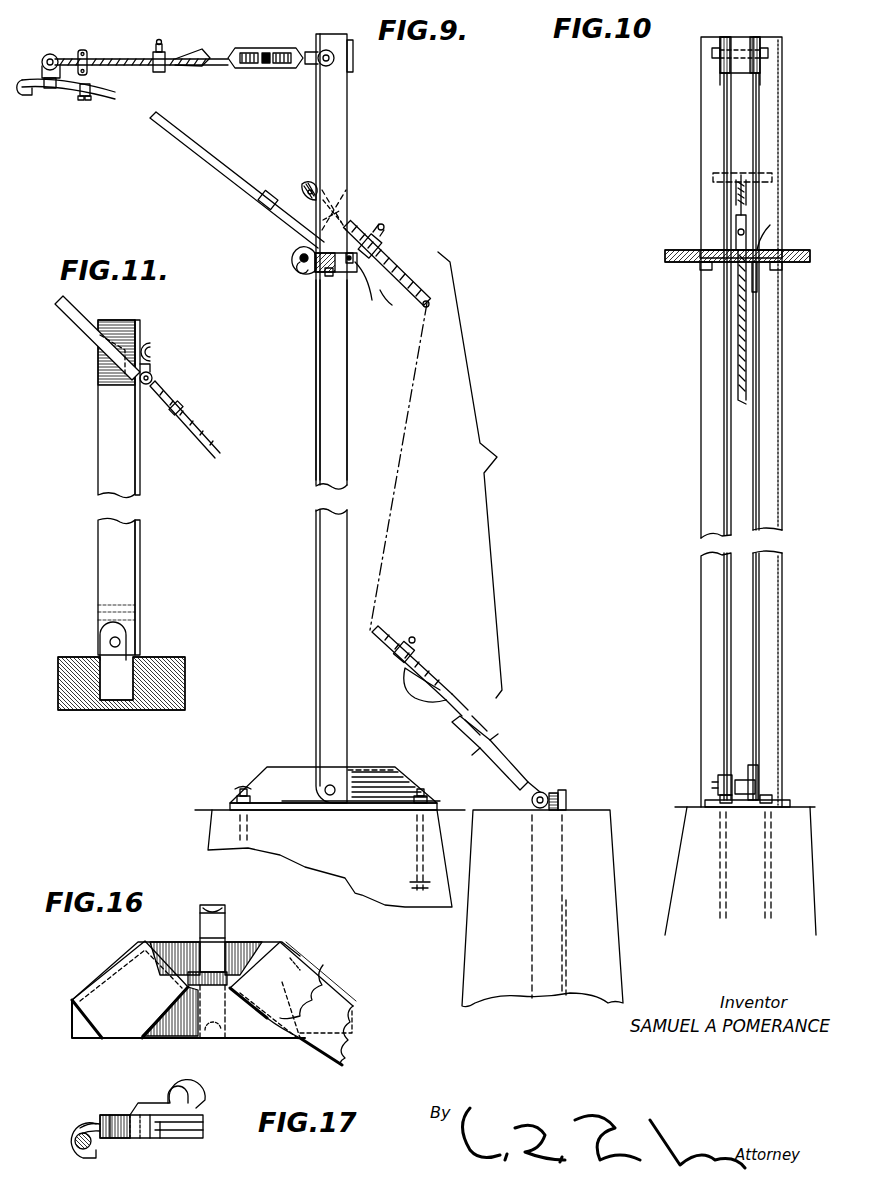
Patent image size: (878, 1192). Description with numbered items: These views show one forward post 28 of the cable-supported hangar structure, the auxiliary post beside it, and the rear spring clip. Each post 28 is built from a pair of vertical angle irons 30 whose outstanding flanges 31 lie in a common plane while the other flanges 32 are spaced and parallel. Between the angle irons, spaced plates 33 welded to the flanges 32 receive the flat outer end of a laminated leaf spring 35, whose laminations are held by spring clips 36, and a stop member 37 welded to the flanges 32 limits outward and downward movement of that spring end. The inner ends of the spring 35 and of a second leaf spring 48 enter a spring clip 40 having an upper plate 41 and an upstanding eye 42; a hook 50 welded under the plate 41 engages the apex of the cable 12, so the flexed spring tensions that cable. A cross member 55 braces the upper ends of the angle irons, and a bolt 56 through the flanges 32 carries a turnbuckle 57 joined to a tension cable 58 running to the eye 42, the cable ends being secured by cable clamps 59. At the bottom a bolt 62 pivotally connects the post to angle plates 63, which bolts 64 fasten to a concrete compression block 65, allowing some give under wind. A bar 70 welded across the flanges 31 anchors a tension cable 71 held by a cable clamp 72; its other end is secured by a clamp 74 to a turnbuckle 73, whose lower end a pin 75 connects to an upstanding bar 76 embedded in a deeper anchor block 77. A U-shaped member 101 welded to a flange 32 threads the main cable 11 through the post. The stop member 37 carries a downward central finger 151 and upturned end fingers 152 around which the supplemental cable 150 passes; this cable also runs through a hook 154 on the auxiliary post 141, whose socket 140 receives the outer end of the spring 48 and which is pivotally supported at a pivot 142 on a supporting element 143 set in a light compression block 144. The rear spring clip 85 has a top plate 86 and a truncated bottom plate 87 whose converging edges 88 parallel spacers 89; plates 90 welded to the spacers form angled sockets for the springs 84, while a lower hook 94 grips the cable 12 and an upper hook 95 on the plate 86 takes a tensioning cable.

In FIG. 9, the cable 11 is at (298, 264).
In FIG. 9, the cable 12 is at (38, 95).
In FIG. 16, the cable 12 is at (226, 910).
In FIG. 17, the cable 12 is at (84, 1126).
In FIG. 9, the forward post 28 is at (349, 165).
In FIG. 10, the forward post 28 is at (696, 322).
In FIG. 9, the vertical angle iron 30 is at (348, 378).
In FIG. 10, the vertical angle iron 30 is at (762, 252).
In FIG. 9, the outstanding flange 31 is at (318, 328).
In FIG. 10, the outstanding flange 31 is at (702, 150).
In FIG. 9, the flange 32 is at (338, 345).
In FIG. 10, the flange 32 is at (722, 108).
In FIG. 9, the spaced plate 33 is at (341, 212).
In FIG. 10, the spaced plate 33 is at (735, 220).
In FIG. 9, the laminated leaf spring 35 is at (240, 178).
In FIG. 9, the spring clip 36 is at (88, 100).
In FIG. 9, the stop member 37 is at (340, 272).
In FIG. 10, the stop member 37 is at (705, 253).
In FIG. 9, the spring clip 40 is at (52, 90).
In FIG. 9, the upper plate 41 is at (42, 70).
In FIG. 9, the upstanding eye 42 is at (52, 54).
In FIG. 11, the leaf spring 48 is at (62, 320).
In FIG. 9, the hook 50 is at (25, 96).
In FIG. 9, the cross member 55 is at (353, 68).
In FIG. 10, the cross member 55 is at (720, 80).
In FIG. 9, the bolt 56 is at (315, 66).
In FIG. 10, the bolt 56 is at (715, 53).
In FIG. 9, the turnbuckle 57 is at (268, 70).
In FIG. 9, the tension cable 58 is at (158, 72).
In FIG. 9, the cable clamp 59 is at (86, 55).
In FIG. 9, the bolt 62 is at (334, 786).
In FIG. 10, the bolt 62 is at (715, 780).
In FIG. 9, the angle plate 63 is at (385, 775).
In FIG. 10, the angle plate 63 is at (758, 768).
In FIG. 9, the bolt 64 is at (240, 796).
In FIG. 9, the compression block 65 is at (438, 820).
In FIG. 10, the compression block 65 is at (790, 805).
In FIG. 9, the bar 70 is at (308, 180).
In FIG. 9, the tension cable 71 is at (398, 280).
In FIG. 10, the tension cable 71 is at (738, 362).
In FIG. 9, the cable clamp 72 is at (383, 230).
In FIG. 9, the turnbuckle 73 is at (492, 758).
In FIG. 9, the cable clamp 74 is at (414, 646).
In FIG. 9, the pin 75 is at (544, 792).
In FIG. 9, the upstanding bar 76 is at (566, 793).
In FIG. 9, the anchor block 77 is at (598, 815).
In FIG. 16, the spring leaf 84 is at (362, 1017).
In FIG. 16, the spring clip 85 is at (321, 970).
In FIG. 17, the spring clip 85 is at (203, 1115).
In FIG. 16, the top plate 86 is at (245, 958).
In FIG. 17, the top plate 86 is at (110, 1115).
In FIG. 16, the bottom plate 87 is at (252, 1038).
In FIG. 17, the bottom plate 87 is at (163, 1138).
In FIG. 16, the converging edge 88 is at (300, 1038).
In FIG. 17, the converging edge 88 is at (203, 1128).
In FIG. 16, the spacer 89 is at (336, 985).
In FIG. 17, the spacer 89 is at (118, 1140).
In FIG. 16, the plate 90 is at (287, 958).
In FIG. 17, the plate 90 is at (198, 1138).
In FIG. 17, the lower hook 94 is at (66, 1144).
In FIG. 16, the upper hook 95 is at (236, 992).
In FIG. 17, the upper hook 95 is at (180, 1085).
In FIG. 9, the U-shaped member 101 is at (322, 272).
In FIG. 10, the U-shaped member 101 is at (758, 290).
In FIG. 11, the socket 140 is at (100, 352).
In FIG. 11, the post 141 is at (142, 435).
In FIG. 11, the pivot 142 is at (102, 628).
In FIG. 11, the supporting element 143 is at (100, 648).
In FIG. 11, the compression block 144 is at (160, 665).
In FIG. 9, the supplemental cable 150 is at (372, 300).
In FIG. 10, the supplemental cable 150 is at (672, 260).
In FIG. 11, the supplemental cable 150 is at (152, 375).
In FIG. 9, the central finger 151 is at (421, 306).
In FIG. 10, the central finger 151 is at (770, 240).
In FIG. 9, the upturned finger 152 is at (330, 276).
In FIG. 10, the upturned finger 152 is at (705, 268).
In FIG. 11, the hook 154 is at (150, 346).